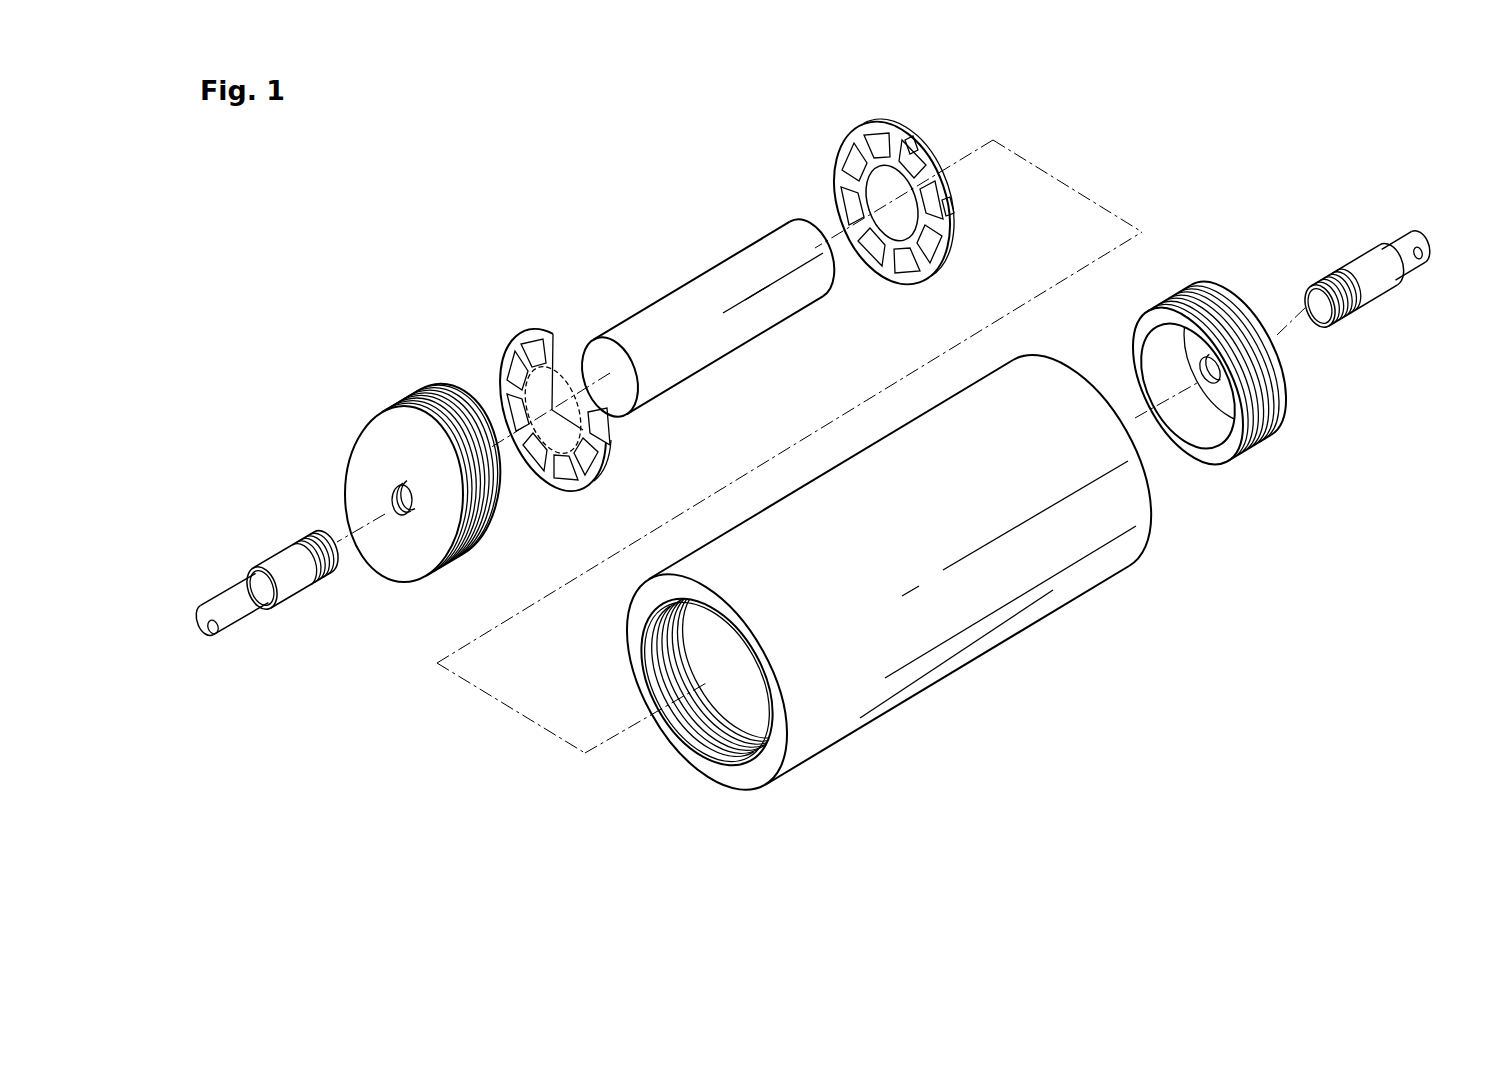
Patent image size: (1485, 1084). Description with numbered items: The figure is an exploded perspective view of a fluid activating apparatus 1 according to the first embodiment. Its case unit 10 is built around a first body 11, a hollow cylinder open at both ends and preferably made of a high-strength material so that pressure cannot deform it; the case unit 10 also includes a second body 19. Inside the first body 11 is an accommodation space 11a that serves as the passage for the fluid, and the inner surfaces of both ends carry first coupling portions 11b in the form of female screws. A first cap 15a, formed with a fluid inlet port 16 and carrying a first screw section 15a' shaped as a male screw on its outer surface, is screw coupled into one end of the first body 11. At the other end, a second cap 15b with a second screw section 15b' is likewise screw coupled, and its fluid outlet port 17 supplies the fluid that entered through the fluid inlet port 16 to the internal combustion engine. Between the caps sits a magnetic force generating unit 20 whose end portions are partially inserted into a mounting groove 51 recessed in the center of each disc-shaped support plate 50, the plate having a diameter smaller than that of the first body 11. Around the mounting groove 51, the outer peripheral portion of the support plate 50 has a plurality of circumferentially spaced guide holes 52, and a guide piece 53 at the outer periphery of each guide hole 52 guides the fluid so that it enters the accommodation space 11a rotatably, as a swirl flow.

The fluid activating apparatus 1 is at (813, 465).
The case unit 10 is at (849, 604).
The first body 11 is at (701, 755).
The accommodation space 11a is at (712, 667).
The first coupling portions 11b is at (670, 623).
The first cap 15a is at (388, 460).
The first screw section 15a' is at (429, 455).
The second cap 15b is at (1242, 347).
The second screw section 15b' is at (1263, 383).
The fluid inlet port 16 is at (390, 498).
The fluid outlet port 17 is at (1220, 371).
The second body 19 is at (1067, 585).
The magnetic force generating unit 20 is at (670, 353).
The support plate 50 is at (717, 283).
The mounting groove 51 is at (888, 205).
The guide holes 52 is at (863, 132).
The guide piece 53 is at (603, 430).